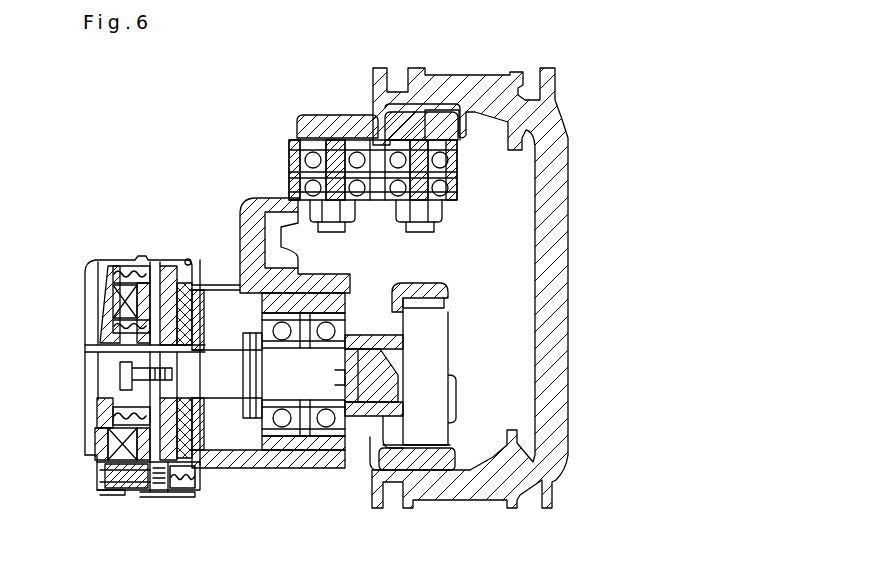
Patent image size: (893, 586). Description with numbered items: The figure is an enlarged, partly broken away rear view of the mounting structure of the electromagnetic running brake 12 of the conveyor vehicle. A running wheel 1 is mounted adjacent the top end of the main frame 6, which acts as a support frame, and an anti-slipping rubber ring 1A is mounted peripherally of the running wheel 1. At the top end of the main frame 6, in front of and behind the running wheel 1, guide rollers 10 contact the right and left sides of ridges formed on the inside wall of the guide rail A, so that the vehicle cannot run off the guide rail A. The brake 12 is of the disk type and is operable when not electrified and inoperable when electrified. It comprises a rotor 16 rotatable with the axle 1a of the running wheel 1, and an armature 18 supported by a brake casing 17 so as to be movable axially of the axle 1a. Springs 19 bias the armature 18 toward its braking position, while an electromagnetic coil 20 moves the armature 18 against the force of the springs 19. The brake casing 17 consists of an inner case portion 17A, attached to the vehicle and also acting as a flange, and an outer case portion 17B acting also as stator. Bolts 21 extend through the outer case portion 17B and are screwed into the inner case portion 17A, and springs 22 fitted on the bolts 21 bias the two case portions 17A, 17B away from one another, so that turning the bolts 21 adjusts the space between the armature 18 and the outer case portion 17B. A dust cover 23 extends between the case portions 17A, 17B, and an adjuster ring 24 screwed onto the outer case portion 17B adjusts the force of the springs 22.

The guide rail A is at (570, 250).
The running wheel 1 is at (445, 310).
The axle 1a is at (290, 385).
The anti-slipping rubber ring 1A is at (425, 470).
The main frame 6 is at (252, 198).
The guide roller 10 is at (303, 115).
The electromagnetic running brake 12 is at (134, 212).
The rotor 16 is at (118, 392).
The brake casing 17 is at (102, 253).
The inner case portion 17A is at (190, 456).
The outer case portion 17B is at (100, 304).
The armature 18 is at (162, 263).
The springs 19 is at (125, 265).
The electromagnetic coil 20 is at (125, 493).
The bolts 21 is at (93, 474).
The springs 22 is at (157, 497).
The dust cover 23 is at (183, 496).
The adjuster ring 24 is at (97, 413).